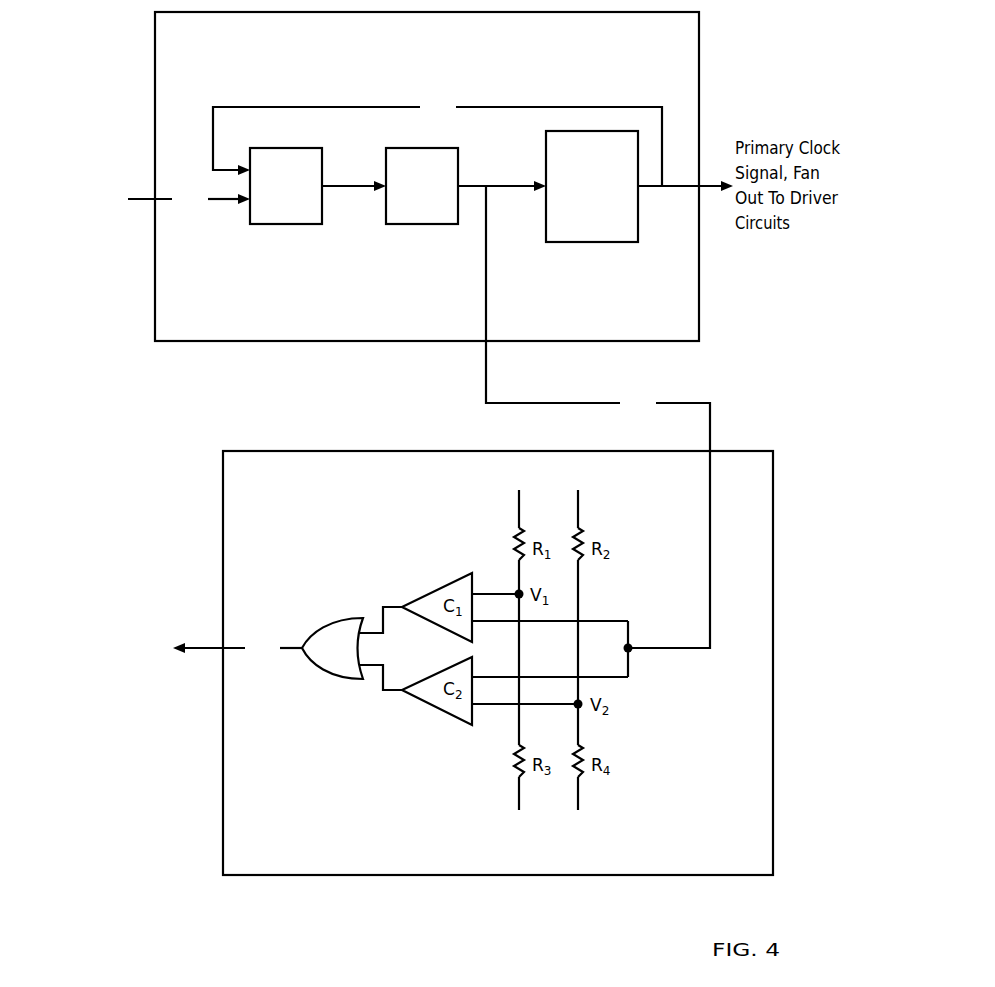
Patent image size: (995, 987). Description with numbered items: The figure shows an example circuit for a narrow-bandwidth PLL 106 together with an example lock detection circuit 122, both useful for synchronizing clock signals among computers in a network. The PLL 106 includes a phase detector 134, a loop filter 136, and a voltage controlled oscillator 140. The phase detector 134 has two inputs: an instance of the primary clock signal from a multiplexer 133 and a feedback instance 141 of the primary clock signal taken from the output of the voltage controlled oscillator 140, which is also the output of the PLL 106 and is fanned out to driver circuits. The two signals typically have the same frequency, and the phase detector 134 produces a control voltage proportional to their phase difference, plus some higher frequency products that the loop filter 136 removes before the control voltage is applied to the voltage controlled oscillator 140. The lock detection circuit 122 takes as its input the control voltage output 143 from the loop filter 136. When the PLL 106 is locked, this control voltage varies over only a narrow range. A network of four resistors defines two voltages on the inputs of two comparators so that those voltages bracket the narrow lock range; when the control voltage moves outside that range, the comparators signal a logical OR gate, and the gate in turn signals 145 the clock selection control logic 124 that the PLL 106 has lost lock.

The narrow-bandwidth PLL 106 is at (595, 35).
The lock detection circuit 122 is at (600, 872).
The clock selection control logic 124 is at (66, 706).
The primary clock signal from a multiplexer 133 is at (176, 208).
The phase detector 134 is at (272, 217).
The loop filter 136 is at (437, 208).
The voltage controlled oscillator 140 is at (578, 232).
The feedback instance of the primary clock signal 141 is at (452, 116).
The control voltage output 143 is at (624, 412).
The loss-of-lock signal 145 is at (277, 657).